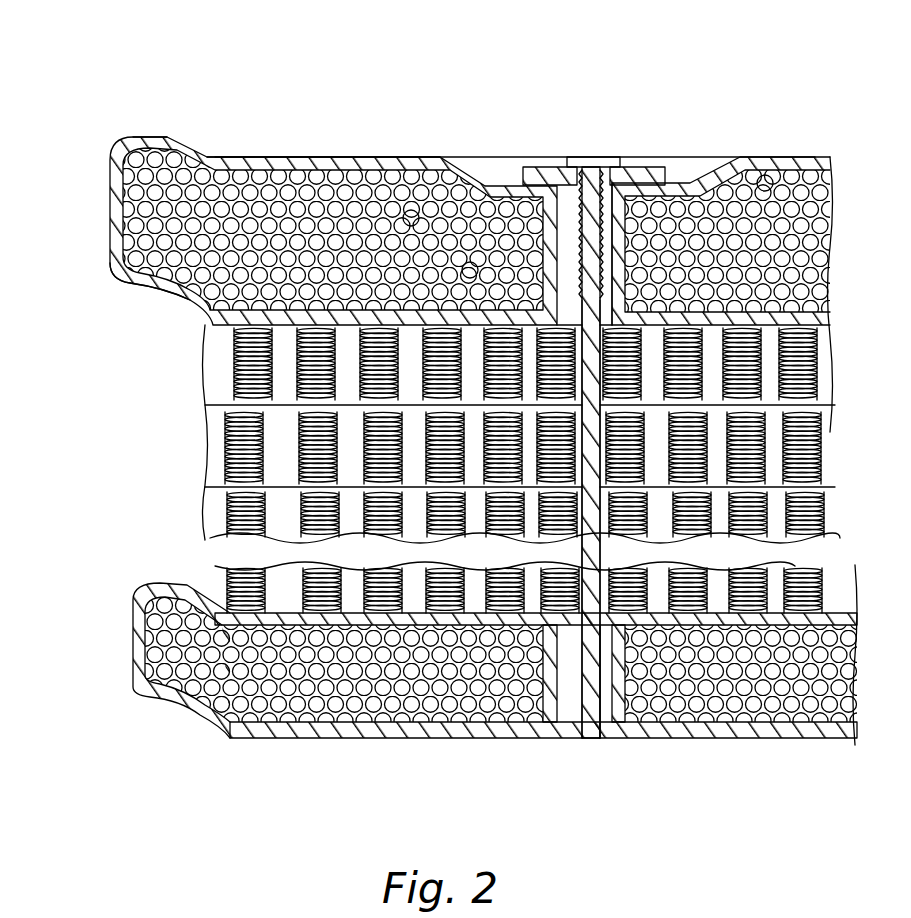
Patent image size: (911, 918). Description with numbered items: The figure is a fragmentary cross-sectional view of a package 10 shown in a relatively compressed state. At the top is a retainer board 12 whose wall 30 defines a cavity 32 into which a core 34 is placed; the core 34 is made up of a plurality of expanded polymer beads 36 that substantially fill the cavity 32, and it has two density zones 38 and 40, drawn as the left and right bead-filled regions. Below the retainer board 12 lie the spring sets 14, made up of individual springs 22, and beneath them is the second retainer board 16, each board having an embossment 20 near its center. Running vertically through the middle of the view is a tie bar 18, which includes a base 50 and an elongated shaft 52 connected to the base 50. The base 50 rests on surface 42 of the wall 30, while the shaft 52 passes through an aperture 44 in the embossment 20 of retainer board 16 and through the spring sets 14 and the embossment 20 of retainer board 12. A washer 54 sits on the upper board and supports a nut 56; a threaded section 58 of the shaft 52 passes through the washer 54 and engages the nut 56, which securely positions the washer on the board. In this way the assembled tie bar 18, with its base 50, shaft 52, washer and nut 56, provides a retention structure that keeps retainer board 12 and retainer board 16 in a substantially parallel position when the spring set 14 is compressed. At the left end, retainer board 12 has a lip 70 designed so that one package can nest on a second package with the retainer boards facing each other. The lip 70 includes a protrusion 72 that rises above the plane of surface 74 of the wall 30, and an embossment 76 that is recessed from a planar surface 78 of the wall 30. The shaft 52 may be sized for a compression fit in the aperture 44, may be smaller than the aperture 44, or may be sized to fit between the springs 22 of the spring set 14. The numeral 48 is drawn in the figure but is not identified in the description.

The package 10 is at (289, 92).
The retainer board 12 is at (325, 152).
The spring set 14 is at (205, 408).
The retainer board 16 is at (243, 740).
The tie bar 18 is at (664, 152).
The embossment 20 is at (480, 150).
The springs 22 is at (215, 462).
The wall 30 is at (368, 152).
The cavity 32 is at (435, 249).
The core 34 is at (414, 203).
The expanded polymer beads 36 is at (768, 176).
The density zone 38 is at (288, 249).
The density zone 40 is at (673, 261).
The surface 42 is at (613, 243).
The aperture 44 is at (655, 208).
The central post 48 is at (614, 428).
The base 50 is at (598, 700).
The shaft 52 is at (582, 693).
The washer 54 is at (538, 167).
The nut 56 is at (592, 157).
The threaded section 58 is at (630, 157).
The lip 70 is at (118, 126).
The protrusion 72 is at (150, 137).
The surface 74 is at (215, 150).
The embossment 76 is at (138, 290).
The planar surface 78 is at (205, 350).